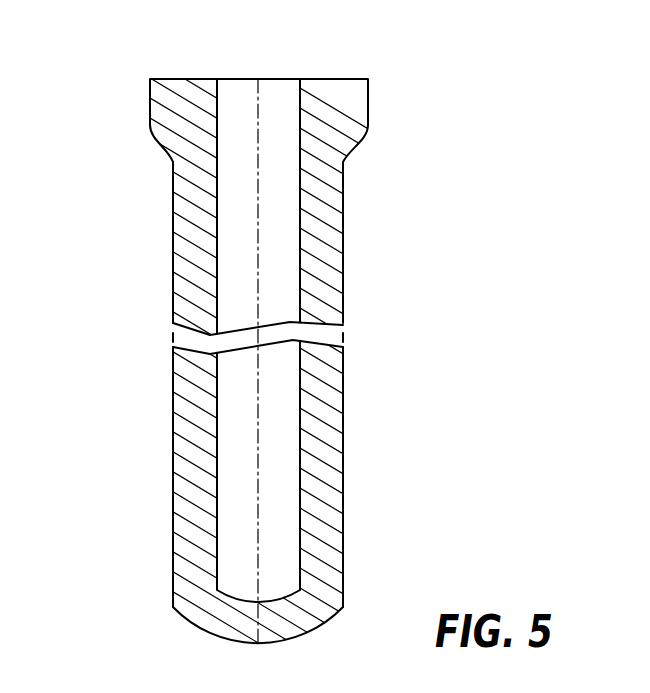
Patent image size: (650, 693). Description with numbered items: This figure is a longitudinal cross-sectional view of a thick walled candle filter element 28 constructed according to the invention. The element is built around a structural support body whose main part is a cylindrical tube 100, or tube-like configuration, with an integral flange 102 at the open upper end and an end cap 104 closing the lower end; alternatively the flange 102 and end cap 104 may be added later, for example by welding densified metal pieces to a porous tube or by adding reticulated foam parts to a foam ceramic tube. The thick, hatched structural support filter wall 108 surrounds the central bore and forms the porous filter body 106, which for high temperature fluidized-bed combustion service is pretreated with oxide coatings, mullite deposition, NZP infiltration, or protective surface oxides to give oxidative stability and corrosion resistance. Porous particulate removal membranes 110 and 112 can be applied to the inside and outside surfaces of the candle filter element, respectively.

The thick walled candle filter element 28 is at (380, 525).
The cylindrical tube 100 is at (330, 200).
The integral flange 102 is at (150, 122).
The end cap 104 is at (310, 636).
The filter body 106 is at (418, 318).
The structural support filter wall 108 is at (340, 437).
The porous particulate removal membrane 110 is at (218, 102).
The porous particulate removal membrane 112 is at (173, 227).